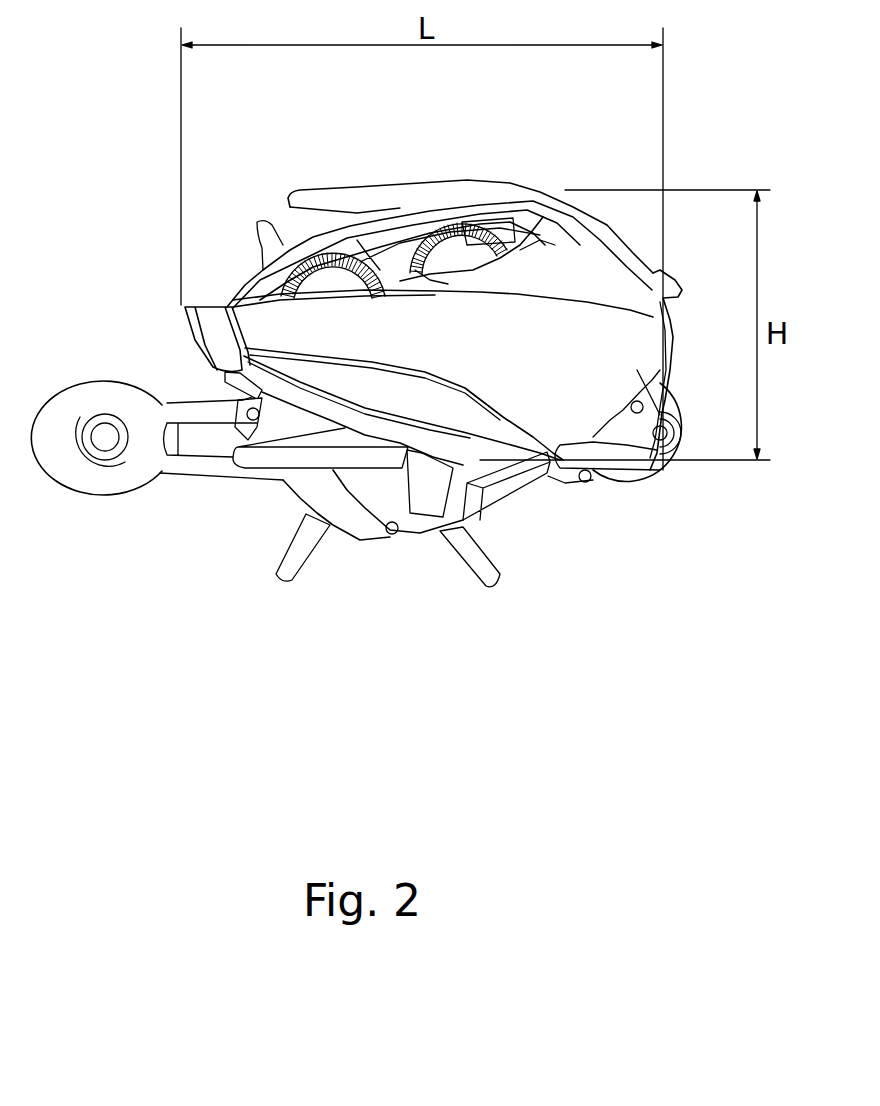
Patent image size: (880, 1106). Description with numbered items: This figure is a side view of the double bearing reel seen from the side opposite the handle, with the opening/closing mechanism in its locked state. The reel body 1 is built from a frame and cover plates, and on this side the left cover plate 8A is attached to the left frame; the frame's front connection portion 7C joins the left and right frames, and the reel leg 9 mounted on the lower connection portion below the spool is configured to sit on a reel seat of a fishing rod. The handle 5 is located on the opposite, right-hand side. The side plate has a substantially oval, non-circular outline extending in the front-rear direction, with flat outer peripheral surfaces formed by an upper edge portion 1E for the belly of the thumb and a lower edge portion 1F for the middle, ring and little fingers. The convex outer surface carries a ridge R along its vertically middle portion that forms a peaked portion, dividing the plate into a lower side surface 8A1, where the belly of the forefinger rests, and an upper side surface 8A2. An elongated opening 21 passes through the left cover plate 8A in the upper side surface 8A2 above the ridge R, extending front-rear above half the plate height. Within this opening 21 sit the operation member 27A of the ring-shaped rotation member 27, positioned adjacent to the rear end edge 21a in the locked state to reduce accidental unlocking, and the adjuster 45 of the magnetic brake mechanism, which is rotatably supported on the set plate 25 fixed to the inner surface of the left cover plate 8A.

The reel body 1 is at (140, 232).
The upper edge portion 1E is at (468, 186).
The lower edge portion 1F is at (416, 465).
The handle 5 is at (138, 457).
The front connection portion 7C is at (193, 337).
The left cover plate 8A is at (660, 455).
The lower side surface 8A1 is at (508, 390).
The upper side surface 8A2 is at (575, 255).
The reel leg 9 is at (273, 455).
The opening 21 is at (395, 262).
The rear end edge 21a is at (537, 230).
The set plate 25 is at (437, 263).
The rotation member 27 is at (453, 250).
The operation member 27A is at (517, 217).
The adjuster 45 is at (283, 252).
The ridge R is at (597, 300).